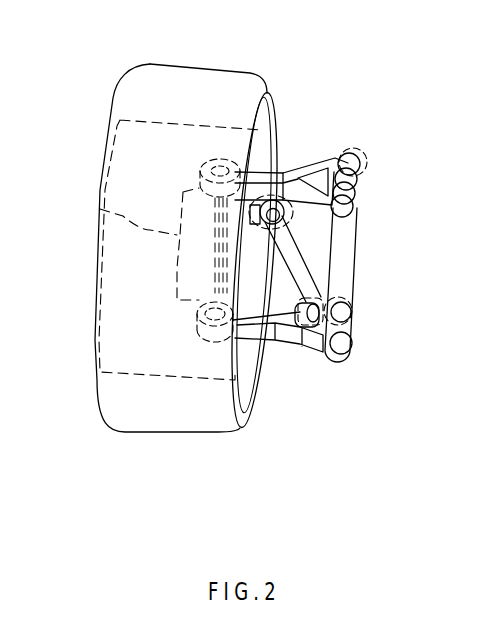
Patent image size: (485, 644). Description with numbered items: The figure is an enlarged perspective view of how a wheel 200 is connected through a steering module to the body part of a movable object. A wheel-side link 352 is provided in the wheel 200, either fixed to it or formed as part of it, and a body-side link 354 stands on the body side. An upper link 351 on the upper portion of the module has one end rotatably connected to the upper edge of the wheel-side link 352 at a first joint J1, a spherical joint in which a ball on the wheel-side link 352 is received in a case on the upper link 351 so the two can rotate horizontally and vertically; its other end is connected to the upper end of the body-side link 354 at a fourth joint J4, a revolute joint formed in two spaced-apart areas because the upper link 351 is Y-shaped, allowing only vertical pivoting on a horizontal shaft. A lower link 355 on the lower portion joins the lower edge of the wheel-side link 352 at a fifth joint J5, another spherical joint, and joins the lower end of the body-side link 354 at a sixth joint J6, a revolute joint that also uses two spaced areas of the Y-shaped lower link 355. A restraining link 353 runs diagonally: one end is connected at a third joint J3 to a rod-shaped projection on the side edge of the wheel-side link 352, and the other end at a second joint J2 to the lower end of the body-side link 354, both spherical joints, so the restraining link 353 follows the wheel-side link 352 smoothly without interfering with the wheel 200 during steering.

The wheel 200 is at (137, 100).
The upper link 351 is at (291, 168).
The wheel-side link 352 is at (100, 209).
The restraining link 353 is at (298, 272).
The body-side link 354 is at (338, 277).
The lower link 355 is at (260, 330).
The first joint J1 is at (222, 157).
The second joint J2 is at (306, 345).
The third joint J3 is at (258, 216).
The fourth joint J4 is at (354, 150).
The fifth joint J5 is at (197, 314).
The sixth joint J6 is at (358, 316).